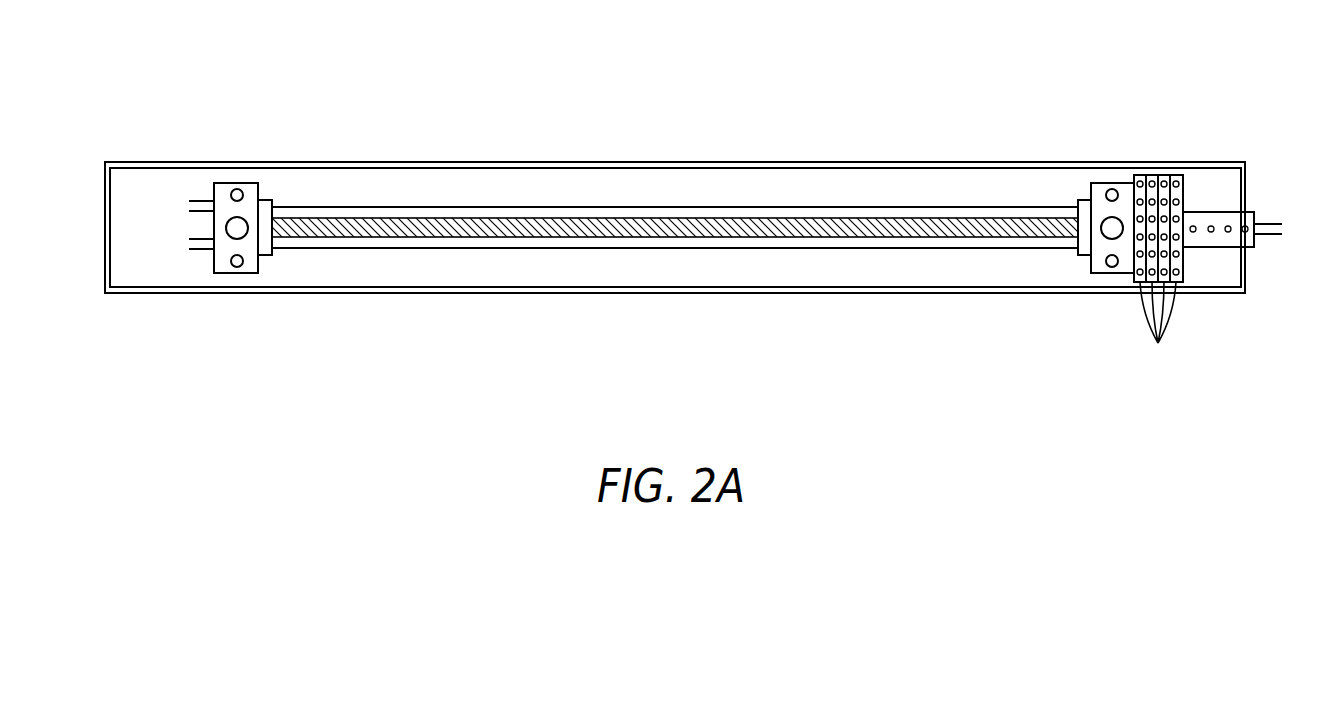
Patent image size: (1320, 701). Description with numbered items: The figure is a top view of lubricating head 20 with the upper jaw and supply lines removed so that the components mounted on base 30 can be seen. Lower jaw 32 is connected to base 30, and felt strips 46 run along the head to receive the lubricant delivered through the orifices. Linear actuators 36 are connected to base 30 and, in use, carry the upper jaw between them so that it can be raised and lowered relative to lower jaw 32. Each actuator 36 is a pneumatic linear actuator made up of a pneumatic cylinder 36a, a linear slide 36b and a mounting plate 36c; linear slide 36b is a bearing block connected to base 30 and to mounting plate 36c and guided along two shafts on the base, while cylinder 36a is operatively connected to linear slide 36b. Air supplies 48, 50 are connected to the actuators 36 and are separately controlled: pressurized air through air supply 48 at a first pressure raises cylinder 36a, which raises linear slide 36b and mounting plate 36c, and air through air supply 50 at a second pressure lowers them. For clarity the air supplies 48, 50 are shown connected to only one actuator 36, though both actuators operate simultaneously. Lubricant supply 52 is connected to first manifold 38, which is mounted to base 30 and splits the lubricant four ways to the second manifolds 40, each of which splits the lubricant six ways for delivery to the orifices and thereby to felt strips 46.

The lubricating head 20 is at (726, 104).
The base 30 is at (873, 162).
The lower jaw 32 is at (995, 198).
The linear actuators 36 is at (248, 285).
The pneumatic cylinder 36a is at (246, 221).
The linear slide 36b is at (215, 183).
The mounting plate 36c is at (268, 200).
The first manifold 38 is at (1207, 212).
The second manifolds 40 is at (1158, 343).
The felt strips 46 is at (523, 227).
The air supply 48 is at (173, 243).
The air supply 50 is at (173, 207).
The lubricant supply 52 is at (1292, 229).